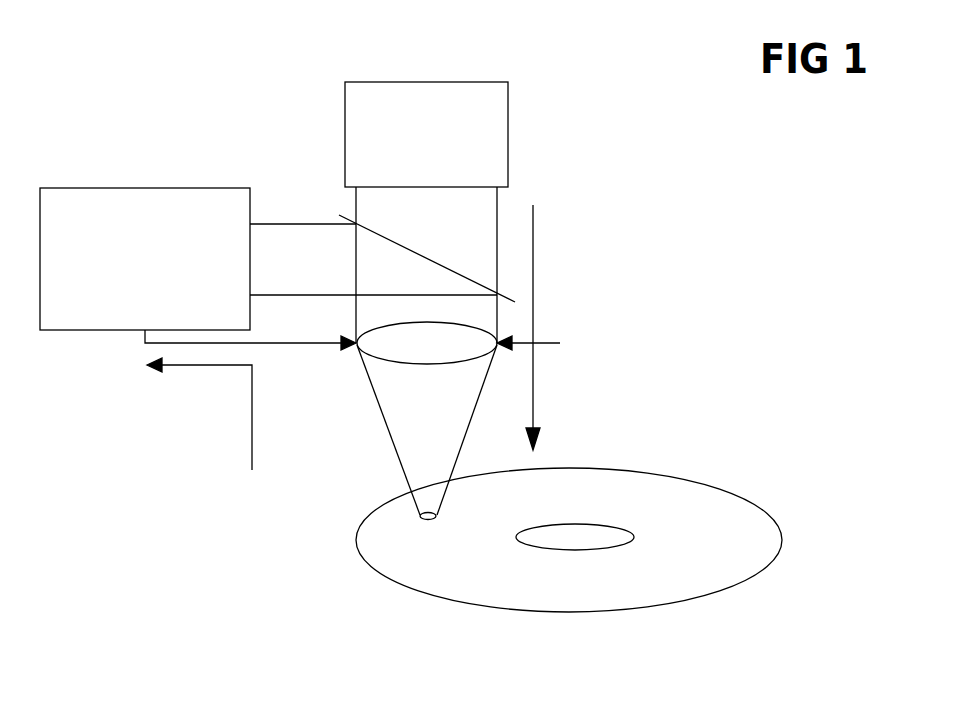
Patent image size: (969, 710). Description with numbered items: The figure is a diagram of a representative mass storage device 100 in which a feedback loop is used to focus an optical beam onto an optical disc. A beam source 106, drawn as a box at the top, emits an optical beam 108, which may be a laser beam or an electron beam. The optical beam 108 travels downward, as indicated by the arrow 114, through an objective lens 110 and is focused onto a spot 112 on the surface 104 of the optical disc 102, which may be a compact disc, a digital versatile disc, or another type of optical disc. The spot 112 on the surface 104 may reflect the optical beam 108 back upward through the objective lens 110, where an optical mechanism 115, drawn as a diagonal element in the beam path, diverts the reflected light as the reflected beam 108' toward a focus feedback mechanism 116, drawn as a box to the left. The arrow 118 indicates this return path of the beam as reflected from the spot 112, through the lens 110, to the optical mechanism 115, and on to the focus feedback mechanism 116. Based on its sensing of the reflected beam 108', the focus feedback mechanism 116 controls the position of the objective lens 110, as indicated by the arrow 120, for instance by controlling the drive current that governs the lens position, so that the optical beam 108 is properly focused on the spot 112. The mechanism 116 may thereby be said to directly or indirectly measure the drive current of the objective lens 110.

The mass storage device 100 is at (265, 598).
The optical disc 102 is at (782, 538).
The surface 104 is at (575, 515).
The beam source 106 is at (426, 134).
The optical beam 108 is at (426, 265).
The reflected beam 108' is at (373, 259).
The objective lens 110 is at (427, 343).
The spot 112 is at (430, 520).
The arrow 114 is at (533, 268).
The optical mechanism 115 is at (456, 273).
The focus feedback mechanism 116 is at (145, 259).
The arrow 118 is at (252, 458).
The arrow 120 is at (267, 343).